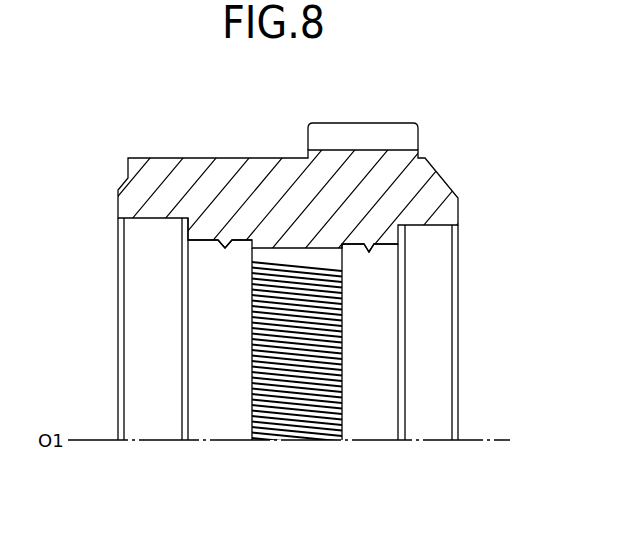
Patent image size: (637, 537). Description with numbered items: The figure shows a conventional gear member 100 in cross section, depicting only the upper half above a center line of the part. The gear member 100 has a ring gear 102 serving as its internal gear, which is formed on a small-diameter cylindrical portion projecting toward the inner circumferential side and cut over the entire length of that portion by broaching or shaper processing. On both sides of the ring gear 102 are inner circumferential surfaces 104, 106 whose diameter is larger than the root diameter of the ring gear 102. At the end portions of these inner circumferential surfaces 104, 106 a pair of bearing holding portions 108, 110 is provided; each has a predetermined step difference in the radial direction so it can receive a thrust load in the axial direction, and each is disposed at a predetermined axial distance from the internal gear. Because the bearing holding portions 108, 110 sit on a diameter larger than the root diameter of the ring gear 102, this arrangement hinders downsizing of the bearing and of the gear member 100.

The gear member 100 is at (158, 130).
The ring gear 102 is at (243, 407).
The inner circumferential surface 104 is at (232, 238).
The inner circumferential surface 106 is at (379, 244).
The bearing holding portion 108 is at (147, 236).
The bearing holding portion 110 is at (425, 237).